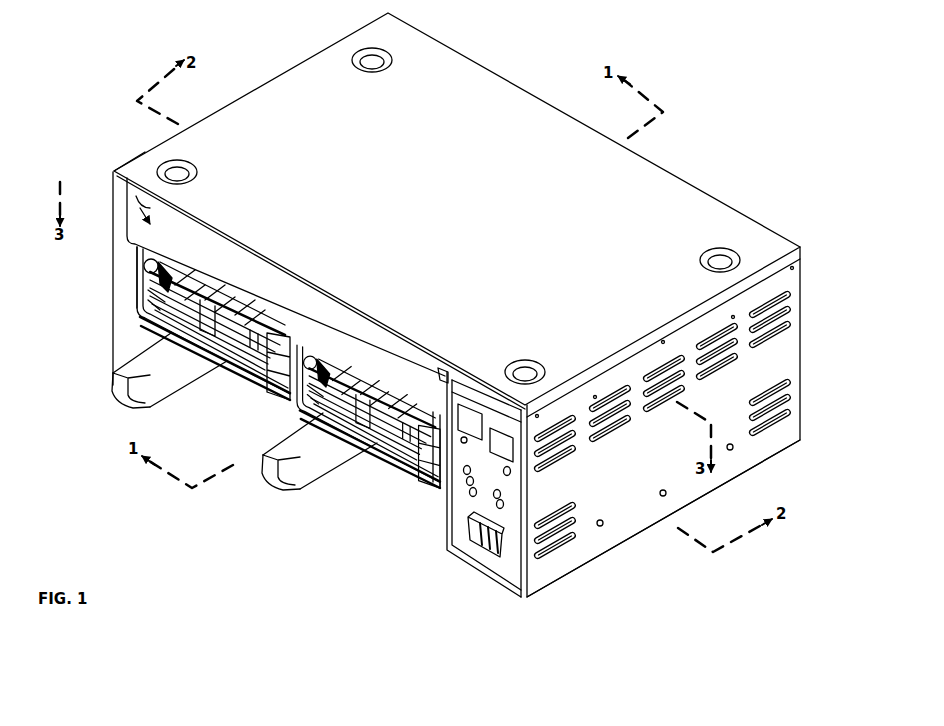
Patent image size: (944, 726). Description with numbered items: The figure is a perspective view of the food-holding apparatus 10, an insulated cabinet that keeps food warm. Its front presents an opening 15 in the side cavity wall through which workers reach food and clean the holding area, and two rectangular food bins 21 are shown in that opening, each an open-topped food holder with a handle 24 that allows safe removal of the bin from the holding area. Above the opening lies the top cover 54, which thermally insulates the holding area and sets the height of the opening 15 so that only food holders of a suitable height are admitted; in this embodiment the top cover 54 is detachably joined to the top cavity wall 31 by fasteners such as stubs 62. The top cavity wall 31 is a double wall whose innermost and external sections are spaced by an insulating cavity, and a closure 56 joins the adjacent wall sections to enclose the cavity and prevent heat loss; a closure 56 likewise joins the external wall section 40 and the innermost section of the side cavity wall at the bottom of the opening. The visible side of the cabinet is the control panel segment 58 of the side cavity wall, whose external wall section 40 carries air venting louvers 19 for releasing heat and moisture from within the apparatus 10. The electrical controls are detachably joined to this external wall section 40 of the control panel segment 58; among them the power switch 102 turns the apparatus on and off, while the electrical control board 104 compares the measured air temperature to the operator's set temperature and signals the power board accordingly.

The food-holding apparatus 10 is at (358, 13).
The opening 15 is at (135, 299).
The air venting louvers 19 is at (803, 400).
The food bin 21 is at (273, 392).
The handle 24 is at (103, 373).
The top cavity wall 31 is at (690, 222).
The external wall section 40 is at (378, 488).
The top cover 54 is at (128, 146).
The closure 56 is at (416, 472).
The control panel segment 58 is at (628, 495).
The stubs 62 is at (432, 370).
The power switch 102 is at (485, 566).
The electrical control board 104 is at (490, 478).